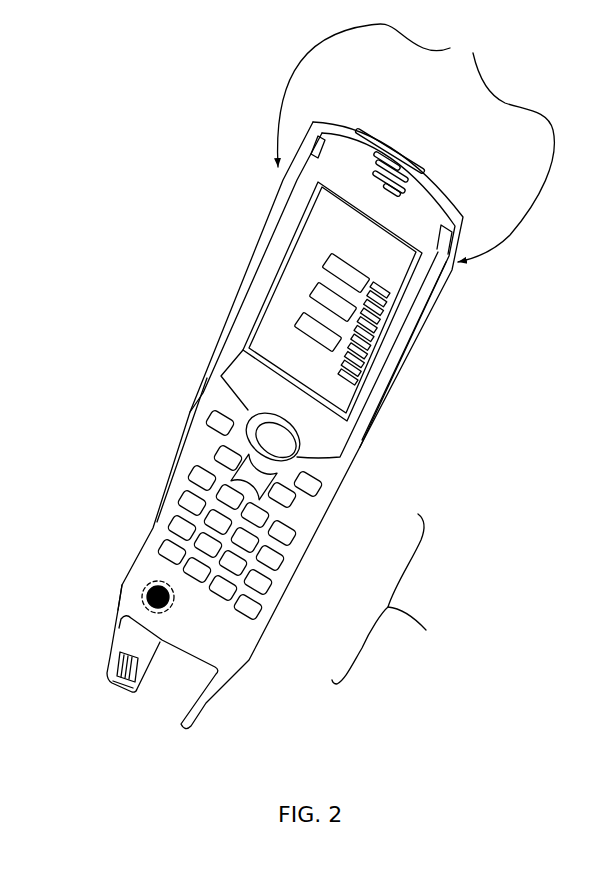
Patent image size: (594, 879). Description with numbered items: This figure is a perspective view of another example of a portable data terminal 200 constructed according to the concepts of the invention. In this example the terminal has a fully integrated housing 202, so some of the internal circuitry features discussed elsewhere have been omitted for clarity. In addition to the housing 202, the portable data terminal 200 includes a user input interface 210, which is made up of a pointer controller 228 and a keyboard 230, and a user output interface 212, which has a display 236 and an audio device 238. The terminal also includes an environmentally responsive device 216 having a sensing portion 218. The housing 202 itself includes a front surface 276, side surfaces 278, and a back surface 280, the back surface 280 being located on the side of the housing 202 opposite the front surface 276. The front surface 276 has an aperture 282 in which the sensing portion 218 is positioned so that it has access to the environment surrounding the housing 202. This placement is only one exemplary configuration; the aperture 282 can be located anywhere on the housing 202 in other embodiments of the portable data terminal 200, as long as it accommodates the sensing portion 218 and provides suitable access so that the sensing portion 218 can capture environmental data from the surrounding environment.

The portable data terminal 200 is at (431, 150).
The housing 202 is at (229, 689).
The user input interface 210 is at (394, 599).
The user output interface 212 is at (297, 213).
The environmentally responsive device 216 is at (129, 598).
The sensing portion 218 is at (145, 586).
The pointer controller 228 is at (262, 418).
The keyboard 230 is at (184, 472).
The display 236 is at (272, 320).
The audio device 238 is at (384, 160).
The front surface 276 is at (304, 518).
The side surfaces 278 is at (416, 143).
The back surface 280 is at (403, 373).
The aperture 282 is at (157, 581).